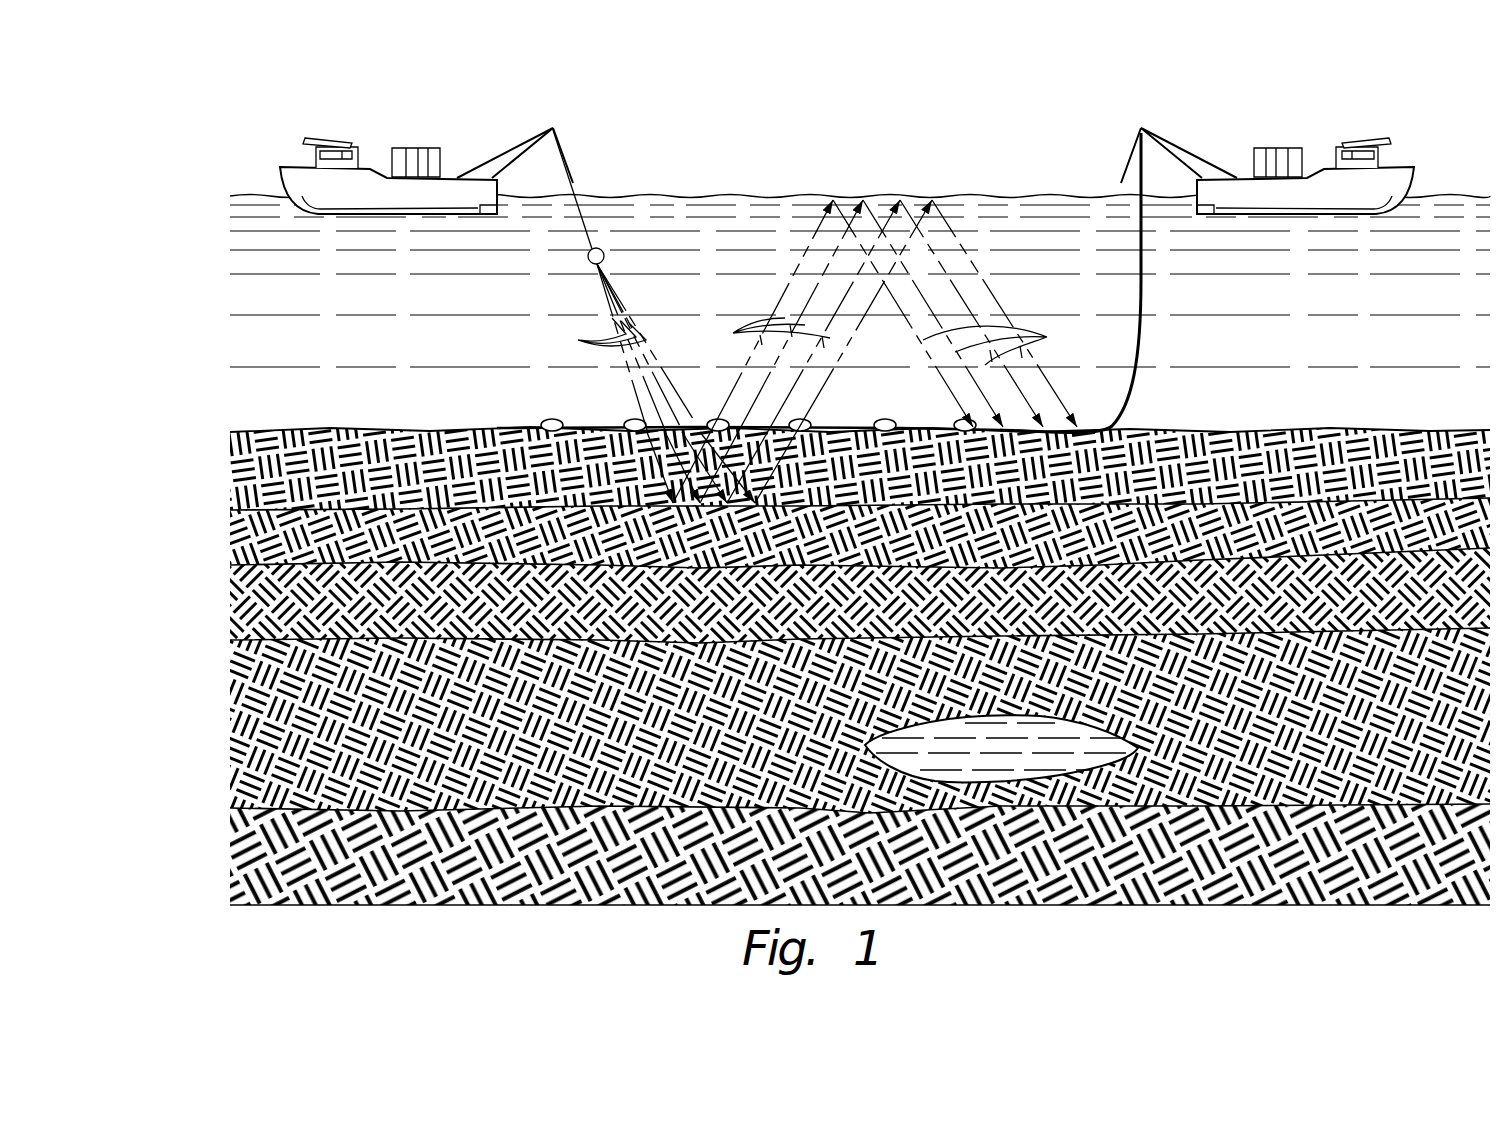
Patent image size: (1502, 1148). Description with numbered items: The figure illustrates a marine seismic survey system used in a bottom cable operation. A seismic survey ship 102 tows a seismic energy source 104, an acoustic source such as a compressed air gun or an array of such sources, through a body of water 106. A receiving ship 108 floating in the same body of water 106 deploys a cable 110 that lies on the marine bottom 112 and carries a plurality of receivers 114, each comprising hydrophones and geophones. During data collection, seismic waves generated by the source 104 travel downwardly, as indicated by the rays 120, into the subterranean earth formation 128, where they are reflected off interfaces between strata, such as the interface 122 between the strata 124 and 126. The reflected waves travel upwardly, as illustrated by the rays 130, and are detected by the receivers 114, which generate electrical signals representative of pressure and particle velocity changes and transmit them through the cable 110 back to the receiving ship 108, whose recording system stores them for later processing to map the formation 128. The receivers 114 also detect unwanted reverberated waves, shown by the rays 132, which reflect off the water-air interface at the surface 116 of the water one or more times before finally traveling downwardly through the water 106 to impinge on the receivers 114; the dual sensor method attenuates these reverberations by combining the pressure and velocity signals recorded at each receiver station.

The seismic survey ship 102 is at (337, 143).
The seismic energy source 104 is at (587, 256).
The body of water 106 is at (1398, 355).
The receiving ship 108 is at (1357, 143).
The cable 110 is at (1150, 297).
The marine bottom 112 is at (1365, 432).
The receiver 114 is at (548, 420).
The surface of the water 116 is at (1005, 196).
The rays 120 is at (578, 340).
The interface 122 is at (1305, 505).
The stratum 124 is at (1172, 480).
The stratum 126 is at (1237, 527).
The subterranean earth formation 128 is at (811, 648).
The rays 130 is at (733, 333).
The rays 132 is at (1040, 337).